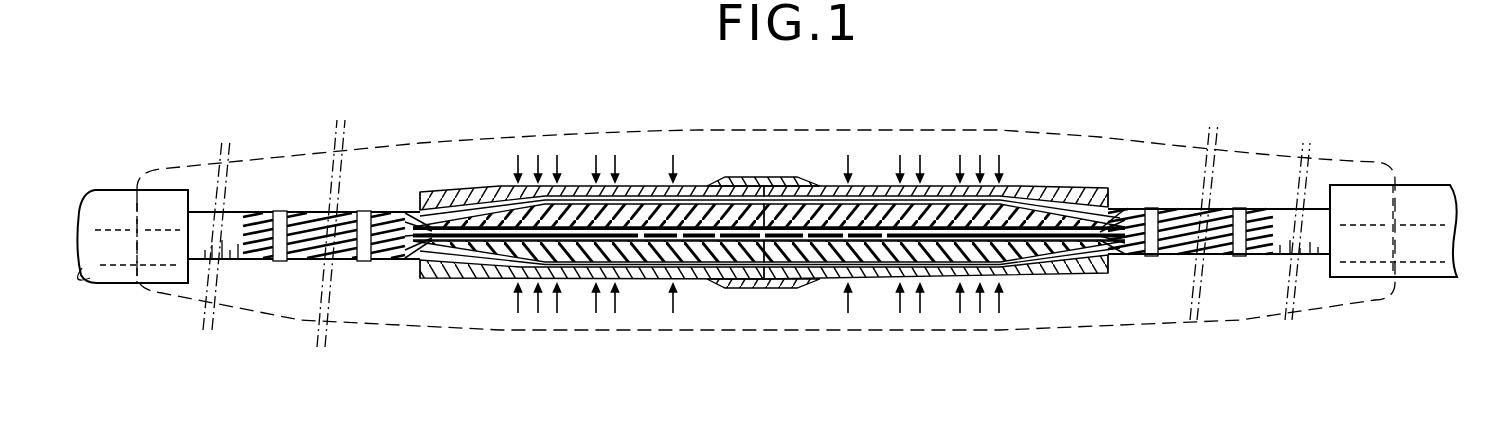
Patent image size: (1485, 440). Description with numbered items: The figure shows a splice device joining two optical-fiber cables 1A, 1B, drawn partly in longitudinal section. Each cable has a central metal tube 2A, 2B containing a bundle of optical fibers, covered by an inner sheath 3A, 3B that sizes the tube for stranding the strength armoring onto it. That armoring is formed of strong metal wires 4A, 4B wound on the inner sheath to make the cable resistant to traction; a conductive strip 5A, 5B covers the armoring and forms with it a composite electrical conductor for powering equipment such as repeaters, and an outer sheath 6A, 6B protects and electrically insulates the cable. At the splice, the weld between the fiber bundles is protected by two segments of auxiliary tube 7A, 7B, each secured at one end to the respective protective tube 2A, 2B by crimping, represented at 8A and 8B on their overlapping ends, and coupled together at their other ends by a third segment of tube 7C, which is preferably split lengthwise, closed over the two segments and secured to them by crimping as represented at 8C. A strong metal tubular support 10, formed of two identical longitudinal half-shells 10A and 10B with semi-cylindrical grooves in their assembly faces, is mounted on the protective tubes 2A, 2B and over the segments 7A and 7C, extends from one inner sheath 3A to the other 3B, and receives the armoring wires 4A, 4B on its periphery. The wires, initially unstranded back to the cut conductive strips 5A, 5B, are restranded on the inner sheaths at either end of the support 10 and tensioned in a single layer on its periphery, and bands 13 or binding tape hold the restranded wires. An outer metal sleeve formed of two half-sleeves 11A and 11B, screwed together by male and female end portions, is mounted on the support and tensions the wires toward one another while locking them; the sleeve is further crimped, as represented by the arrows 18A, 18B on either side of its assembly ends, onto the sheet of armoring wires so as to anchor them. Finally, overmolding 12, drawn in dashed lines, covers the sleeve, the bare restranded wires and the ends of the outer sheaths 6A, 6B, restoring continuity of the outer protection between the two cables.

The cable 1A is at (102, 180).
The cable 1B is at (1419, 176).
The central metal tube 2A is at (410, 210).
The central metal tube 2B is at (1118, 262).
The inner sheath 3A is at (408, 206).
The inner sheath 3B is at (1113, 212).
The armoring wires 4A is at (576, 205).
The armoring wires 4B is at (1012, 215).
The conductive strip 5A is at (228, 235).
The conductive strip 5B is at (1312, 218).
The outer sheath 6A is at (156, 217).
The outer sheath 6B is at (1412, 257).
The segment of auxiliary tube 7A is at (485, 192).
The segment of auxiliary tube 7B is at (1023, 193).
The third segment of tube 7C is at (817, 182).
The crimping 8A is at (463, 263).
The crimping 8B is at (1065, 263).
The crimping 8C is at (800, 268).
The tubular support 10 is at (646, 225).
The half-shell 10A is at (701, 225).
The half-shell 10B is at (692, 246).
The half-sleeve 11A is at (572, 268).
The half-sleeve 11B is at (883, 268).
The overmolding 12 is at (437, 141).
The bands 13 is at (279, 262).
The crimping arrows 18A is at (560, 163).
The crimping arrows 18B is at (967, 160).